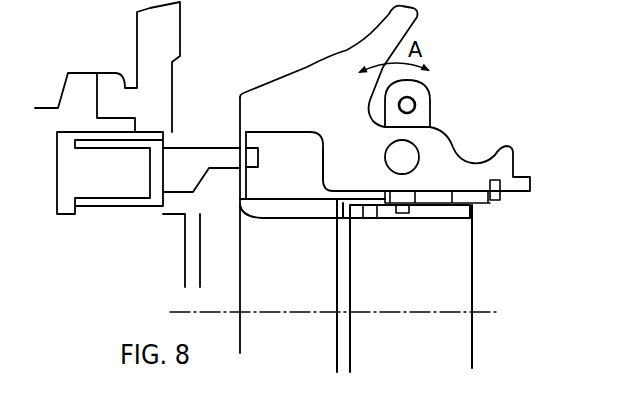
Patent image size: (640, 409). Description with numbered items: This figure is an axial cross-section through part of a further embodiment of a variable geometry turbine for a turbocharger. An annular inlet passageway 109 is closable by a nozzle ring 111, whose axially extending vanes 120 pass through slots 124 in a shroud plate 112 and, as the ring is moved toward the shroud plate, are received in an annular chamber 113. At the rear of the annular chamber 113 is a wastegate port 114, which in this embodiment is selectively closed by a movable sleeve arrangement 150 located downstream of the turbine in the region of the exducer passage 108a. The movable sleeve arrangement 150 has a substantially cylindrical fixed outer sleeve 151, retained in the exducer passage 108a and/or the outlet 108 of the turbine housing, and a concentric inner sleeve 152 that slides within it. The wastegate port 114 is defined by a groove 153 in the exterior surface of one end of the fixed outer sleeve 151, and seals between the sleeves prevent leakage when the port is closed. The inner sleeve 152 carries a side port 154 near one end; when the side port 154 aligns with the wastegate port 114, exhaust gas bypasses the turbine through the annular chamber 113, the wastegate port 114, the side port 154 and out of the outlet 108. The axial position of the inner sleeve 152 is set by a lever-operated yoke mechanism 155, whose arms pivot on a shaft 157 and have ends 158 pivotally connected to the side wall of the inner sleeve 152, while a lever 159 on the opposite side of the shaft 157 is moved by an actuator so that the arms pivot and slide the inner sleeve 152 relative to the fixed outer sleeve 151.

The outlet 108 is at (515, 196).
The exducer passage 108a is at (327, 222).
The annular inlet passageway 109 is at (213, 86).
The nozzle ring 111 is at (108, 220).
The shroud plate 112 is at (240, 132).
The annular chamber 113 is at (316, 180).
The wastegate port 114 is at (320, 194).
The axially extending vanes 120 is at (192, 163).
The slots 124 is at (250, 140).
The movable sleeve arrangement 150 is at (390, 224).
The fixed outer sleeve 151 is at (480, 197).
The inner sleeve 152 is at (473, 208).
The groove 153 is at (343, 190).
The side port 154 is at (368, 210).
The lever-operated yoke mechanism 155 is at (447, 102).
The shaft 157 is at (413, 157).
The ends 158 is at (403, 208).
The lever 159 is at (420, 92).